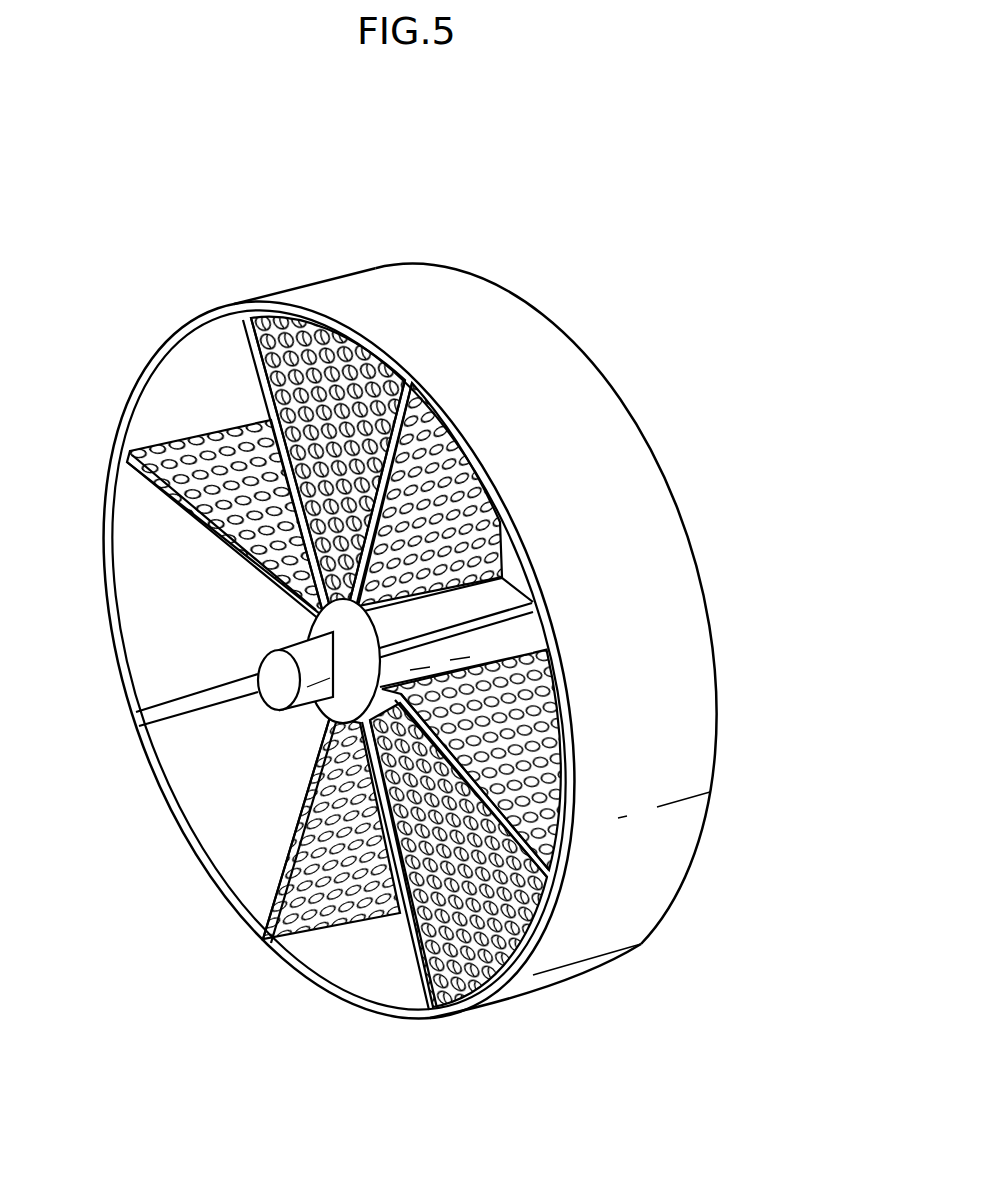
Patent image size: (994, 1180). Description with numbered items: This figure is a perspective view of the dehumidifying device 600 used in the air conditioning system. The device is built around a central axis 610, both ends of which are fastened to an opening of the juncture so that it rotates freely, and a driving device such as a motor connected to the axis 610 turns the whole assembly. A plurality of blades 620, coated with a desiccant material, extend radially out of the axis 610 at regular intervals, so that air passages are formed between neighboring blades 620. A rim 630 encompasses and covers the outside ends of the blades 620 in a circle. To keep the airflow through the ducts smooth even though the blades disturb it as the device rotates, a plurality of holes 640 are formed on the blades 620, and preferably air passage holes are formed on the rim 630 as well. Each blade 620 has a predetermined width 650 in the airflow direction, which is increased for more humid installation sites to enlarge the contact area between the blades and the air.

The dehumidifying device 600 is at (718, 269).
The axis 610 is at (272, 688).
The blades 620 is at (500, 862).
The rim 630 is at (690, 690).
The holes 640 is at (288, 947).
The width 650 is at (530, 680).